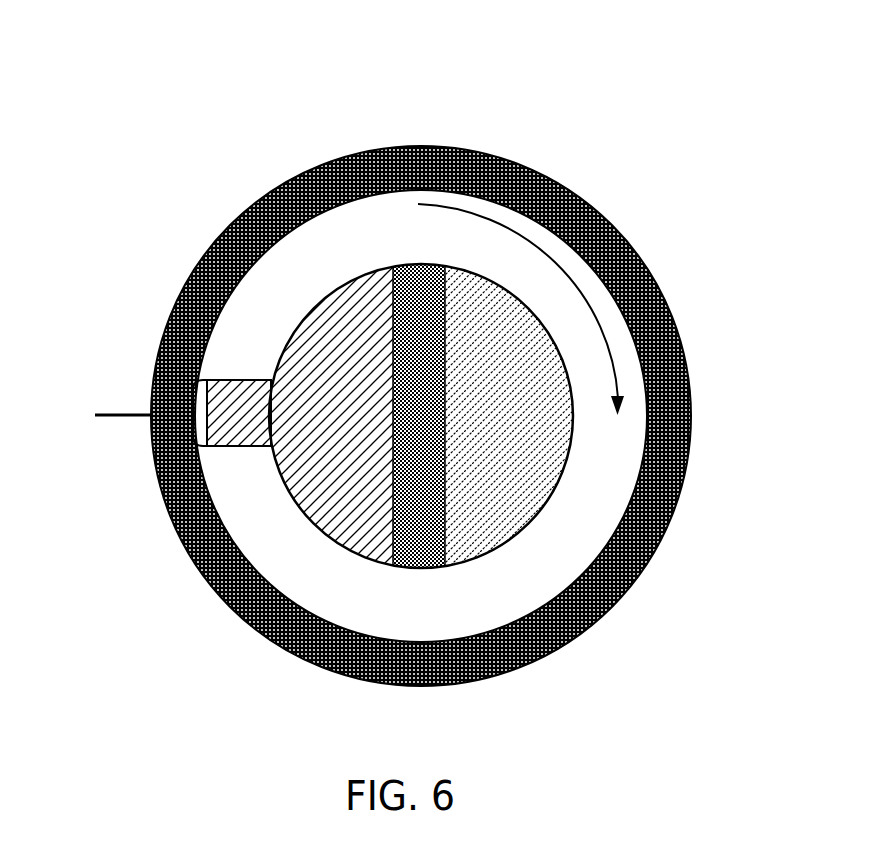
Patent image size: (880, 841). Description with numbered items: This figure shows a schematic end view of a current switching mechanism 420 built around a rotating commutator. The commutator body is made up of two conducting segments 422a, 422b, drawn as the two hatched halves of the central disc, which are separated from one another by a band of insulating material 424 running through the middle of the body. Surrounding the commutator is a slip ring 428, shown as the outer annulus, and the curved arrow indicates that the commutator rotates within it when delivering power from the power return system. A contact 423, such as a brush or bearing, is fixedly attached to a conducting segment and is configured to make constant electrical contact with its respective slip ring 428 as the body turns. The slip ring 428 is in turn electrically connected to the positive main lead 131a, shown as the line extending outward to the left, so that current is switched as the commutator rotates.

The current switching mechanism 420 is at (208, 100).
The slip ring 428 is at (538, 172).
The positive main lead 131a is at (108, 415).
The contact 423 is at (245, 447).
The first conducting segment 422a is at (328, 540).
The second conducting segment 422b is at (540, 517).
The insulating material 424 is at (420, 570).